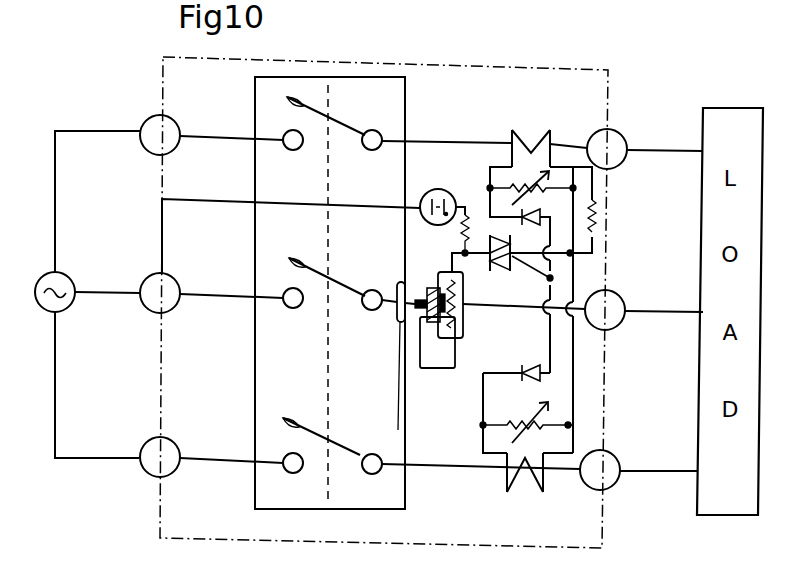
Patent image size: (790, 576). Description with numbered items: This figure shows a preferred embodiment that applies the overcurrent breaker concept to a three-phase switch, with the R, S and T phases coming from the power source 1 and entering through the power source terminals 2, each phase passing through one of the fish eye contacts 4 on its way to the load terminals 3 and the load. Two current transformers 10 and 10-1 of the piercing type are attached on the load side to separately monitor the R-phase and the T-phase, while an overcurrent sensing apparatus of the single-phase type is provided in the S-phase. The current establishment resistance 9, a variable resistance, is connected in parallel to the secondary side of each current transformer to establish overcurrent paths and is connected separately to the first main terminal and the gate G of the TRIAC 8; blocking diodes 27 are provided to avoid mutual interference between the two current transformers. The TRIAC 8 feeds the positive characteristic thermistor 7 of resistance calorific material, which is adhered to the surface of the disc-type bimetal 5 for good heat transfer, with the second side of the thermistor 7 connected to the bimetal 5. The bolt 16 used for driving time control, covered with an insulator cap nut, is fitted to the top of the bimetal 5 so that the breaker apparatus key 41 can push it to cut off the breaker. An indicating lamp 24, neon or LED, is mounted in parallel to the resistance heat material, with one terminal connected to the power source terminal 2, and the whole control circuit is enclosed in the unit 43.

The power source 1 is at (47, 310).
The power source terminal 2 is at (167, 438).
The load terminal 3 is at (613, 447).
The fish eye contacts 4 is at (283, 104).
The bimetal of DISC type 5 is at (430, 323).
The positive characteristic thermistor of resistance calorific material 7 is at (458, 340).
The TRIAC 8 is at (500, 263).
The current establishment resistance 9 is at (507, 160).
The current transformer 10 is at (552, 136).
The current transformer 10-1 is at (507, 478).
The bolt used for driving time control 16 is at (420, 300).
The indicating lamp 24 is at (450, 194).
The diodes 27 is at (527, 230).
The breaker apparatus key 41 is at (396, 323).
The control unit enclosure 43 is at (384, 275).